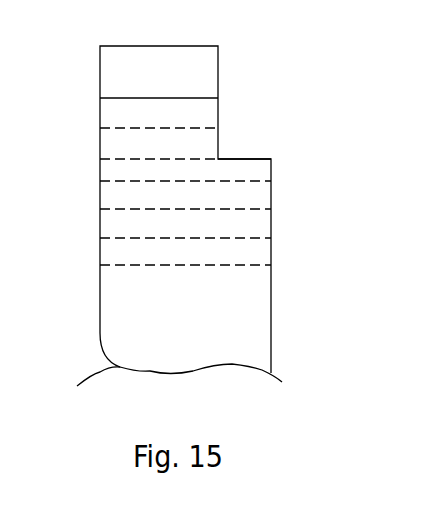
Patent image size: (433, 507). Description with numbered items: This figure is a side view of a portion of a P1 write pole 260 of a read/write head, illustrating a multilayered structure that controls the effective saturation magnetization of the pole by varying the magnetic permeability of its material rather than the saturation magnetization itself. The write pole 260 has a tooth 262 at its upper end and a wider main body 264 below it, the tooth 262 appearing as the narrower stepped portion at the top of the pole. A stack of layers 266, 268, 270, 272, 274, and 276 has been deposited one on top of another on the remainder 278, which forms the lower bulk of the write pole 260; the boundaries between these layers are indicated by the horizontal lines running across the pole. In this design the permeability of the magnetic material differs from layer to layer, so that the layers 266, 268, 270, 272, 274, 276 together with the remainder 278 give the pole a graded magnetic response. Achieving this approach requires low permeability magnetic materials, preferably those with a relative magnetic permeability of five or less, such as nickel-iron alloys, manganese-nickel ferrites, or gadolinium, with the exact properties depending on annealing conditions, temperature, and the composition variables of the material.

The write pole 260 is at (99, 72).
The tooth 262 is at (197, 62).
The main body 264 is at (281, 297).
The layer 266 is at (205, 108).
The layer 268 is at (208, 137).
The layer 270 is at (262, 172).
The layer 272 is at (255, 196).
The layer 274 is at (253, 222).
The layer 276 is at (253, 253).
The remainder 278 is at (250, 317).